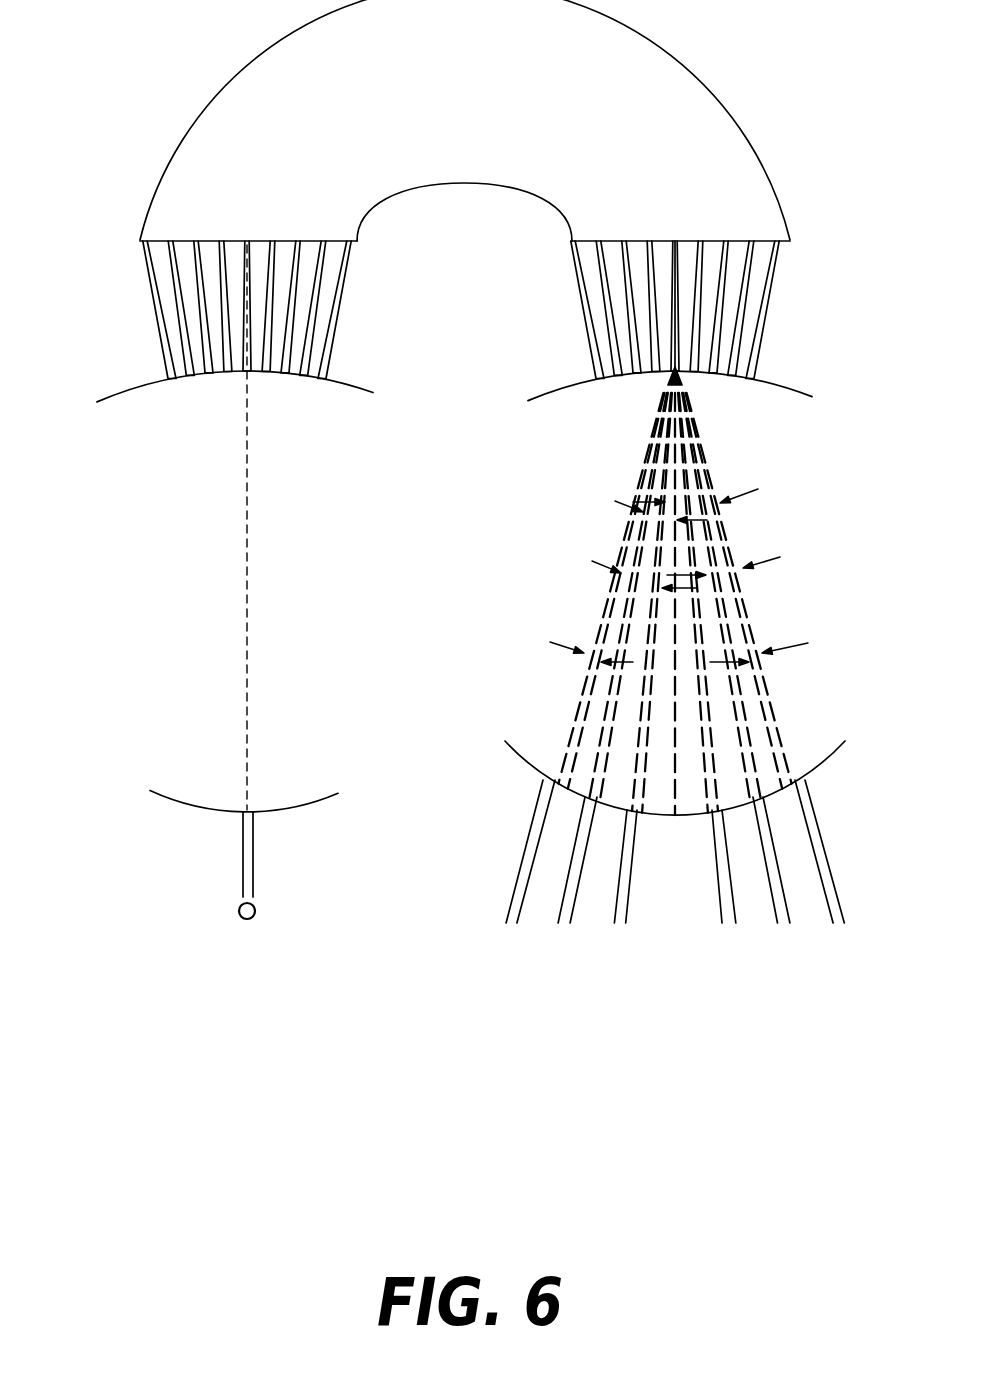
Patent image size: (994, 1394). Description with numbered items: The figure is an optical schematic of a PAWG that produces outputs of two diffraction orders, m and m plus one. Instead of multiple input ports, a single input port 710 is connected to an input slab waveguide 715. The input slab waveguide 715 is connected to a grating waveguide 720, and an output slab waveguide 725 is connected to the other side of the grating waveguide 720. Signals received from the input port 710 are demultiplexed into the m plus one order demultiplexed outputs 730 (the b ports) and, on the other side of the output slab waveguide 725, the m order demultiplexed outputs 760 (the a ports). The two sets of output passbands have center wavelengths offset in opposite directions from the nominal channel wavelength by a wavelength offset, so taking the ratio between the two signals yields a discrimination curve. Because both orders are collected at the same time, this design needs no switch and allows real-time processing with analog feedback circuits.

The input port 710 is at (254, 862).
The input slab waveguide 715 is at (162, 514).
The grating waveguide 720 is at (467, 184).
The output slab waveguide 725 is at (758, 522).
The m+1 order demultiplexed outputs 730 is at (652, 987).
The output ports a1-a3 (order m) 760 is at (878, 987).